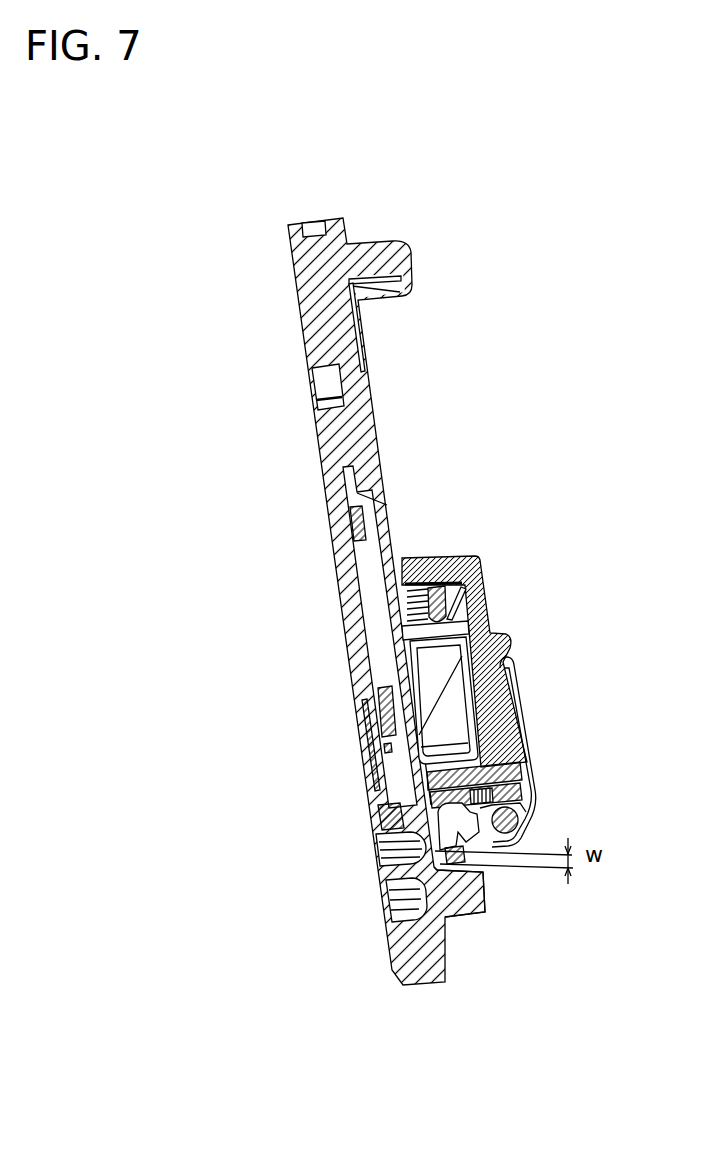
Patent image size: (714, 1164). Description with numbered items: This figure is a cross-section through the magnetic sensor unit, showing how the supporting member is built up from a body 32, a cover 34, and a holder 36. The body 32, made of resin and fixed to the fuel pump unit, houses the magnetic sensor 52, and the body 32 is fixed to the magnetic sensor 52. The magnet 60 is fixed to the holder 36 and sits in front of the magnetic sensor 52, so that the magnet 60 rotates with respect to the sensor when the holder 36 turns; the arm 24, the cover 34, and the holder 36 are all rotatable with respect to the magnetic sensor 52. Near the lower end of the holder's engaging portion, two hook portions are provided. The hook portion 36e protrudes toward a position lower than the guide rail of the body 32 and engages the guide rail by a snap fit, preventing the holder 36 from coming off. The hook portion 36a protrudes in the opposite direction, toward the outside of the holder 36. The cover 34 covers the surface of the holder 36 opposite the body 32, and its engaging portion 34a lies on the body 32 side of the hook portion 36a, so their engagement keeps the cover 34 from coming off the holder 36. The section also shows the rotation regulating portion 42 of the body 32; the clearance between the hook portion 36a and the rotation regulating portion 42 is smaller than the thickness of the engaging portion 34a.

The arm 24 is at (537, 793).
The body 32 is at (422, 947).
The cover 34 is at (490, 622).
The engaging portion 34a is at (388, 870).
The holder 36 is at (493, 773).
The hook portion 36a is at (540, 817).
The hook portion 36e is at (380, 813).
The rotation regulating portion 42 is at (470, 898).
The magnetic sensor 52 is at (374, 697).
The magnet 60 is at (447, 676).